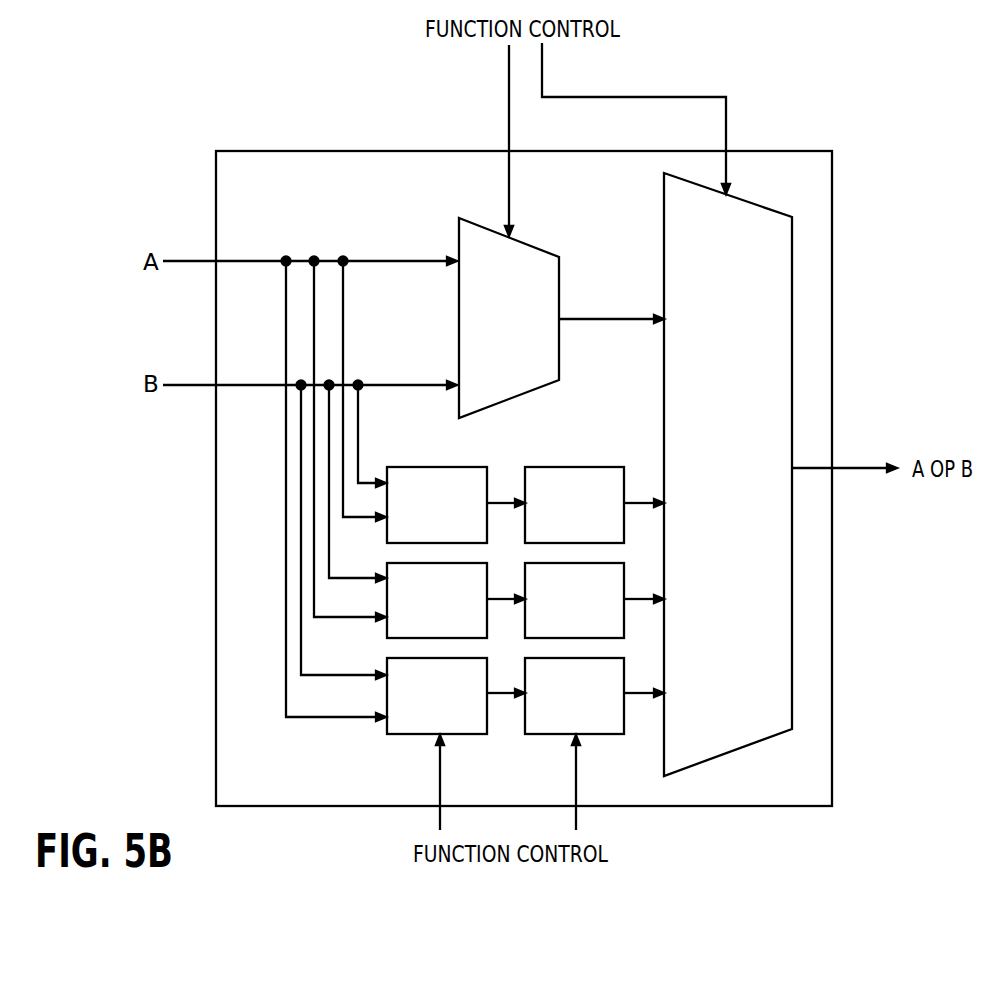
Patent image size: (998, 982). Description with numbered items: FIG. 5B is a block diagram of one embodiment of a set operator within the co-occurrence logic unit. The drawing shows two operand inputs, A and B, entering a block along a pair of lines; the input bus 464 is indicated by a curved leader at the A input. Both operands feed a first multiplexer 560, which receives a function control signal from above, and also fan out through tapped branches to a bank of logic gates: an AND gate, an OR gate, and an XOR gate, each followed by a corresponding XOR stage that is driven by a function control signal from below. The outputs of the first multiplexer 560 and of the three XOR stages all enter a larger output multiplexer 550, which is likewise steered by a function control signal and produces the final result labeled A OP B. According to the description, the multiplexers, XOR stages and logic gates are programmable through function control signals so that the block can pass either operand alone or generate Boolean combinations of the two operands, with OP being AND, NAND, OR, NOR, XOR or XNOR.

The operand input bus 464 is at (378, 253).
The first multiplexer 560 is at (531, 321).
The output multiplexer 550 is at (749, 476).